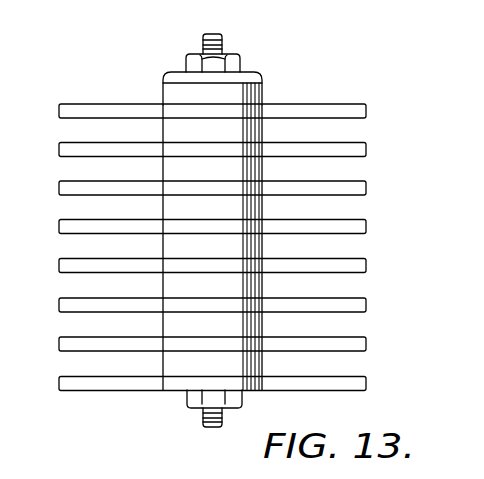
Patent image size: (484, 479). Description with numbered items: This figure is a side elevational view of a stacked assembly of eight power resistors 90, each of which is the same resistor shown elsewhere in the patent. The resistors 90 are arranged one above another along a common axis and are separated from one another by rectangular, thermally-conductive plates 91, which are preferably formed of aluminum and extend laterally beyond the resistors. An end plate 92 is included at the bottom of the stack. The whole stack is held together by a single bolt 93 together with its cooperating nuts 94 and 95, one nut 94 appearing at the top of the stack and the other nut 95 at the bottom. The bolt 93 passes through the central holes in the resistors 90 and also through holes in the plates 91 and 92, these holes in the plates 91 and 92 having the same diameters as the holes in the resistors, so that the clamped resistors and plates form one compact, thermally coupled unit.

The power resistor 90 is at (262, 91).
The thermally-conductive plate 91 is at (61, 150).
The end plate 92 is at (61, 386).
The bolt 93 is at (213, 33).
The nut 94 is at (232, 62).
The nut 95 is at (188, 400).